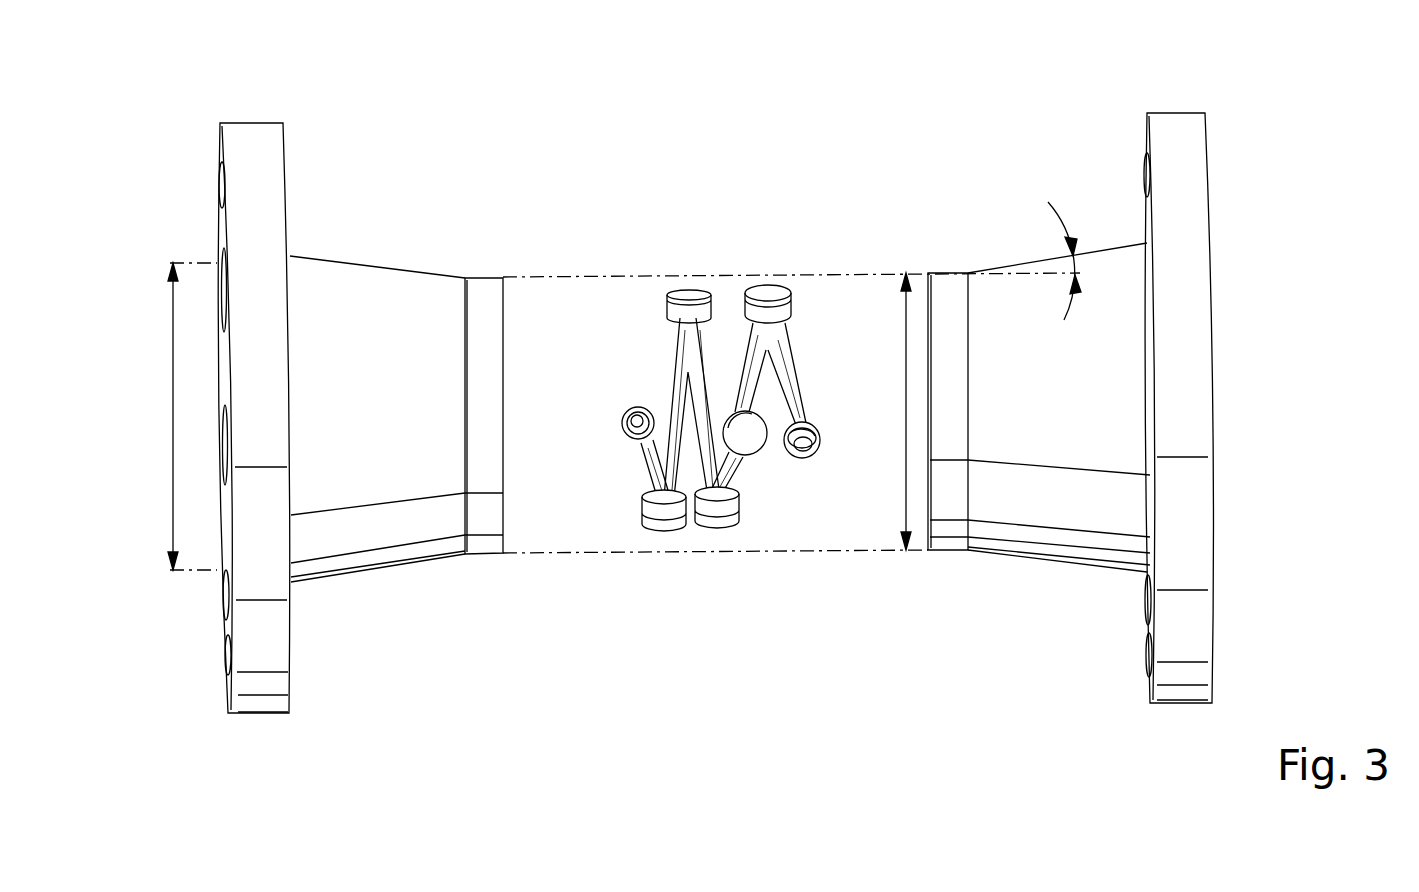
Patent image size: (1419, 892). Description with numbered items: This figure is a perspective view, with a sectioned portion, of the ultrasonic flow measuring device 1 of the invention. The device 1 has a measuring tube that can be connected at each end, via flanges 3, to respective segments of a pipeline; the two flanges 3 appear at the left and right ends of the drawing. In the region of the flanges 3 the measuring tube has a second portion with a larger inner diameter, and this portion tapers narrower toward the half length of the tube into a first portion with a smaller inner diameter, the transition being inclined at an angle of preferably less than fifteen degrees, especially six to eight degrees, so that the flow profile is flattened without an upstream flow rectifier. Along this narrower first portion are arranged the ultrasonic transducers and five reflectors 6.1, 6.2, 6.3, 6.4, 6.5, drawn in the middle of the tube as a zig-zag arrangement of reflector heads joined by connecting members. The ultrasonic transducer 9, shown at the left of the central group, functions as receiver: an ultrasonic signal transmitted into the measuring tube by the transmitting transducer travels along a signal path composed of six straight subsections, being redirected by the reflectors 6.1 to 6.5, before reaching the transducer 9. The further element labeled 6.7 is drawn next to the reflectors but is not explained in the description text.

The ultrasonic flow measuring device 1 is at (904, 192).
The flange 3 is at (1203, 633).
The reflector 6.1 is at (770, 290).
The reflector 6.2 is at (757, 435).
The reflector 6.3 is at (716, 515).
The reflector 6.4 is at (687, 292).
The reflector 6.5 is at (661, 518).
The ultrasonic transducer 6.7 is at (805, 452).
The ultrasonic transducer 9 is at (620, 420).